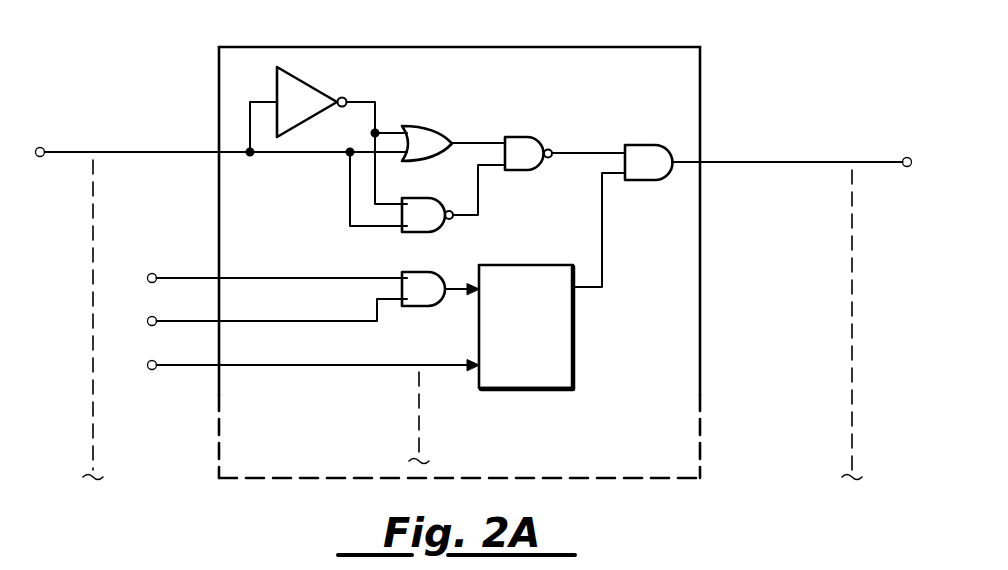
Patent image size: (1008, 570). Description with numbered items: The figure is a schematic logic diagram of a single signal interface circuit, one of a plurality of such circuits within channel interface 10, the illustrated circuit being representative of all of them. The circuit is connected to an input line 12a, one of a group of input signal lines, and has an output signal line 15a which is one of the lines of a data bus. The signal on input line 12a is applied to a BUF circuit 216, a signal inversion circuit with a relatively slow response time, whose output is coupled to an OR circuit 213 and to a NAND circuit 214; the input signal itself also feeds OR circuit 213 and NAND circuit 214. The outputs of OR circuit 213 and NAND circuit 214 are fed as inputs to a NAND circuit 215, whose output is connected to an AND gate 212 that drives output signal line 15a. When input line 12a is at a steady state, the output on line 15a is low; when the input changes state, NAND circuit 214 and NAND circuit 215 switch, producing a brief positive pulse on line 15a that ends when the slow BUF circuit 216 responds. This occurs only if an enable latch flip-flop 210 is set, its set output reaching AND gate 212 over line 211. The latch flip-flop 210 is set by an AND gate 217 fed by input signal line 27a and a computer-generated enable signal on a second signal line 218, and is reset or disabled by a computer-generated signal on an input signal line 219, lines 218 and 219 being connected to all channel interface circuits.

The channel interface 10 is at (522, 47).
The input line 12a is at (127, 152).
The output signal line 15a is at (820, 162).
The input signal line 27a is at (190, 275).
The enable latch flip-flop 210 is at (512, 265).
The line 211 is at (602, 232).
The AND gate 212 is at (637, 145).
The OR circuit 213 is at (412, 126).
The NAND circuit 214 is at (412, 198).
The NAND circuit 215 is at (515, 137).
The BUF circuit 216 is at (300, 80).
The AND gate 217 is at (408, 272).
The second signal line 218 is at (190, 318).
The input signal line 219 is at (193, 362).